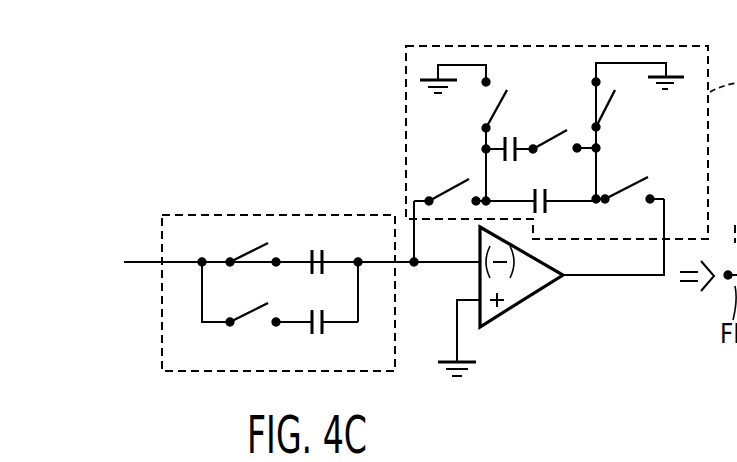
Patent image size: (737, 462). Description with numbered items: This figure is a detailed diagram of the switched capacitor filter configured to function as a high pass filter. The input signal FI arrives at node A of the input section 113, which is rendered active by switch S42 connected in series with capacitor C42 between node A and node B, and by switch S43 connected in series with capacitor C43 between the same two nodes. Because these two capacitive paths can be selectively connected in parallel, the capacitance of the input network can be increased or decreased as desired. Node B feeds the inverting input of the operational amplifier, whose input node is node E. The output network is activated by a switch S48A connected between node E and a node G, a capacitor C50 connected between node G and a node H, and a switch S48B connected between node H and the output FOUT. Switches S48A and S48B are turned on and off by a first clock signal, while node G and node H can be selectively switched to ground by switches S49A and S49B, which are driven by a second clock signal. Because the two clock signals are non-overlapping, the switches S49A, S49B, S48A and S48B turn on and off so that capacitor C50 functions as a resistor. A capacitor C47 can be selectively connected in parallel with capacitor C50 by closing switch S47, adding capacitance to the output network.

The input section 113 is at (176, 213).
The input signal FI is at (152, 261).
The node A is at (200, 268).
The node B is at (360, 268).
The switch S43 is at (247, 245).
The switch S42 is at (247, 304).
The capacitor C43 is at (317, 248).
The capacitor C42 is at (317, 337).
The node E is at (416, 266).
The node G is at (485, 205).
The node H is at (600, 196).
The output node FOUT is at (645, 277).
The switch S49A is at (491, 115).
The switch S49B is at (611, 115).
The switch S48A is at (450, 187).
The switch S48B is at (636, 198).
The switch S47 is at (562, 152).
The capacitor C47 is at (507, 164).
The capacitor C50 is at (541, 209).